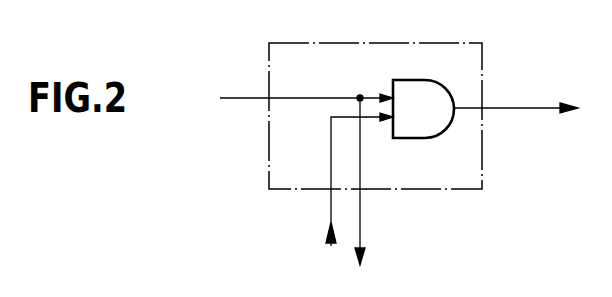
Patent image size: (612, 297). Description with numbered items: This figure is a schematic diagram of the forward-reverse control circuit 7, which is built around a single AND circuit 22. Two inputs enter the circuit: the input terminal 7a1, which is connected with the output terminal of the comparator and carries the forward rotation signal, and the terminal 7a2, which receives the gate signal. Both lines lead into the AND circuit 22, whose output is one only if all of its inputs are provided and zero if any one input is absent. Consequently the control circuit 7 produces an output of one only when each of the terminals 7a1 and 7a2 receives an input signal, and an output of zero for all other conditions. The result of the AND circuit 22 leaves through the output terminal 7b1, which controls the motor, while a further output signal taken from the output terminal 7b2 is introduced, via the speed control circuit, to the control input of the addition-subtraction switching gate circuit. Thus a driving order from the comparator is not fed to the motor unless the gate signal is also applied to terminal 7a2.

The forward-reverse control circuit 7 is at (483, 62).
The AND circuit 22 is at (434, 138).
The input terminal 7a1 is at (235, 97).
The terminal 7a2 is at (328, 215).
The output terminal 7b1 is at (503, 107).
The output terminal 7b2 is at (370, 210).